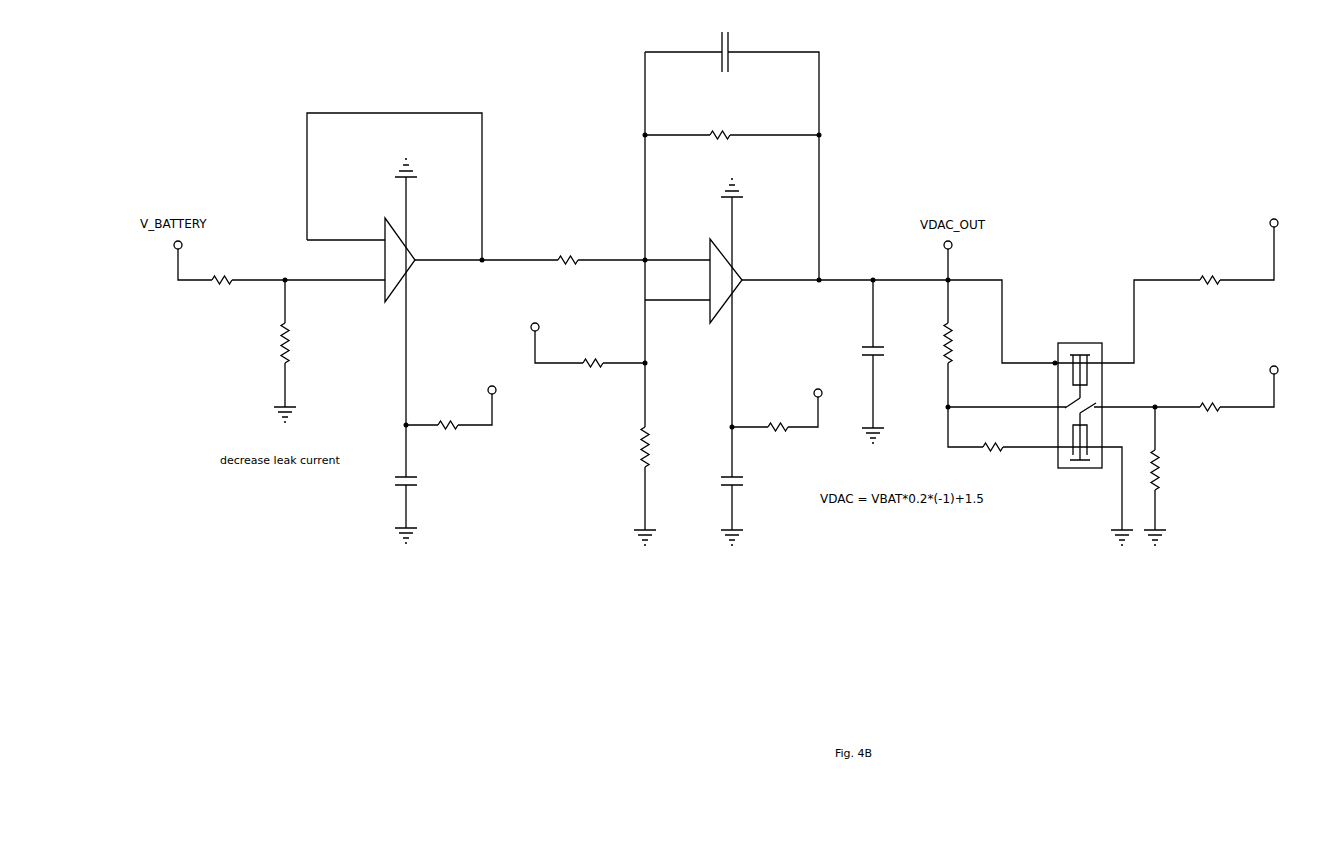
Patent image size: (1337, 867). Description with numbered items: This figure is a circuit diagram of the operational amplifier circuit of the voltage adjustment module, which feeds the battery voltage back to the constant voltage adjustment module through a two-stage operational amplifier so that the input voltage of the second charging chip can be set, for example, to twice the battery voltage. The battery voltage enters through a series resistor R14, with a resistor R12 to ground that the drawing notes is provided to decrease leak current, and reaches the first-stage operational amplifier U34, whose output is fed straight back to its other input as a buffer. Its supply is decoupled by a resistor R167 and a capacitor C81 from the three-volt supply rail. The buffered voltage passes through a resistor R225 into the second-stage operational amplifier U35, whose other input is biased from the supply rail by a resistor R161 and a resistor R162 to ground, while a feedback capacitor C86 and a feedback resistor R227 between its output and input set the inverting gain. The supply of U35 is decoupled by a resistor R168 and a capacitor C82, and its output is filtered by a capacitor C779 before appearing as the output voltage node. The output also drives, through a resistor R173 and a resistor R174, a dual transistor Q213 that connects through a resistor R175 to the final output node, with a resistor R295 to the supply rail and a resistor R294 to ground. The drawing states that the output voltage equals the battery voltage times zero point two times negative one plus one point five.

The resistor 200K 1% R0402 R14 is at (291, 280).
The resistor 205K 1% R0402 R12 is at (310, 351).
The operational amplifier OPA320 SOT-23 U34 is at (432, 269).
The resistor 0R 5% R0402 R167 is at (463, 403).
The capacitor 0.1uF 50V C0402 C81 is at (434, 484).
The resistor 10K 1% R0402 R225 is at (617, 260).
The resistor 300K 1% R0402 R161 is at (568, 339).
The resistor 100K 1% R0402 R162 is at (670, 298).
The capacitor 1pF 50V NC C0402 C86 is at (732, 156).
The resistor 10K 1% R0402 R227 is at (732, 137).
The operational amplifier OPA320 SOT-23 U35 is at (851, 303).
The resistor 0R 5% R0402 R168 is at (787, 403).
The capacitor 0.1uF 50V C0402 C82 is at (761, 486).
The capacitor 1nF 50V C0402 C779 is at (896, 361).
The resistor 100K 1% R0402 R173 is at (1001, 345).
The resistor 0R 5% R0402 R174 is at (1003, 436).
The dual transistor NTJD4105CT1 SOT-363 Q213 is at (1088, 444).
The resistor 0R 1% R0402 R175 is at (1197, 279).
The resistor 1K 1% R0402 R295 is at (1201, 382).
The resistor 100K 1% R0402 R294 is at (1180, 476).